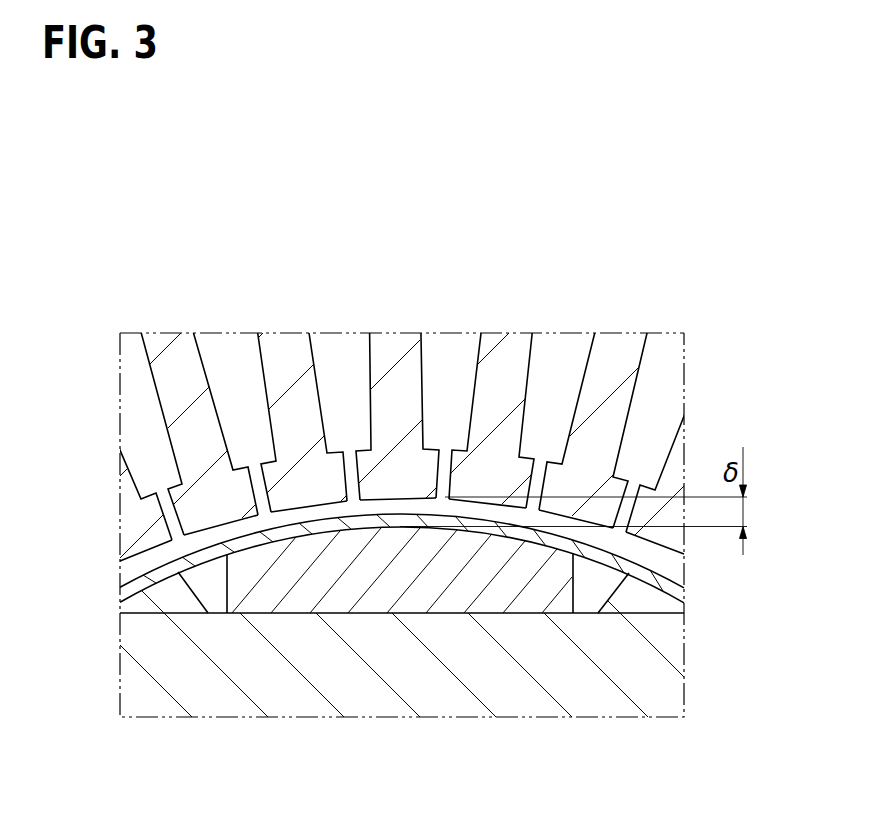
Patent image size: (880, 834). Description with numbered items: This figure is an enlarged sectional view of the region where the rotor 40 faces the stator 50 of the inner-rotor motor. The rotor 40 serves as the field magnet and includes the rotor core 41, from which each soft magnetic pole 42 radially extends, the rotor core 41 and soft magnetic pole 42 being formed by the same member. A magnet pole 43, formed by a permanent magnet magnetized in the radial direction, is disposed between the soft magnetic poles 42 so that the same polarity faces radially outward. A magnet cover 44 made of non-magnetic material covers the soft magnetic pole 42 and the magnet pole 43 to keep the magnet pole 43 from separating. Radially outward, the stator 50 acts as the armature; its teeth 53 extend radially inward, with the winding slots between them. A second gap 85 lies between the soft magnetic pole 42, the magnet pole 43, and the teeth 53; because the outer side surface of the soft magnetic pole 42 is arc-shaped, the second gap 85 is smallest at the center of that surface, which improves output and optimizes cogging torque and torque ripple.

The rotor 40 is at (128, 681).
The rotor core 41 is at (505, 697).
The soft magnetic pole 42 is at (665, 607).
The magnet pole 43 is at (390, 590).
The magnet cover 44 is at (150, 577).
The stator 50 is at (395, 402).
The teeth 53 is at (612, 350).
The second gap 85 is at (445, 497).